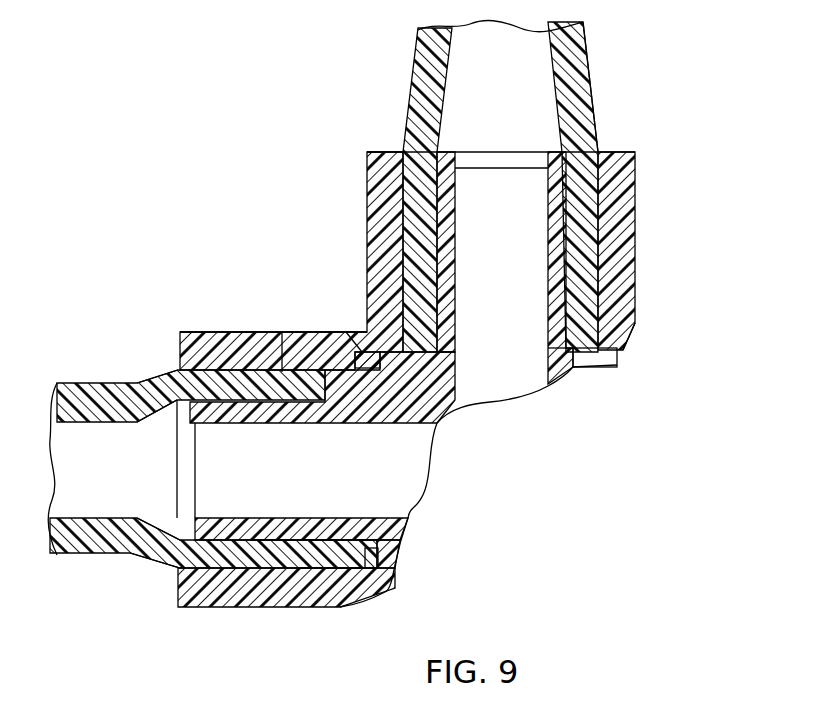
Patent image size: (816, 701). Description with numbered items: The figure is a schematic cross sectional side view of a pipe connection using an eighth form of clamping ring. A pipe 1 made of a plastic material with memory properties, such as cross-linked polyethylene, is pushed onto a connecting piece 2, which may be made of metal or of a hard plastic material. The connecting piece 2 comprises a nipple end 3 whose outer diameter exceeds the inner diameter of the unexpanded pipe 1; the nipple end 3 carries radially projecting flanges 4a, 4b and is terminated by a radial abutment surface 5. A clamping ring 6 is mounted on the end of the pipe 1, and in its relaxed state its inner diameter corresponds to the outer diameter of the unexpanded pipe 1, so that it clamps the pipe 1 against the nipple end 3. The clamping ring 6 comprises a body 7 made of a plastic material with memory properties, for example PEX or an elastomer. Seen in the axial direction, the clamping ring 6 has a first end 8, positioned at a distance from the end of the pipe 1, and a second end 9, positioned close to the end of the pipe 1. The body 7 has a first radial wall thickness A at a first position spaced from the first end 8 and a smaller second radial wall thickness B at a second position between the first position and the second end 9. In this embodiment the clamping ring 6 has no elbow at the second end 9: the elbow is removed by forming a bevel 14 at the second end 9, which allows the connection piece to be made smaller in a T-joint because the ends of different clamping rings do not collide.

The pipe 1 is at (576, 75).
The connecting piece 2 is at (538, 476).
The nipple end 3 is at (556, 246).
The flange 4a is at (583, 145).
The flange 4b is at (434, 255).
The radial abutment surface 5 is at (636, 306).
The clamping ring 6 is at (657, 232).
The body 7 is at (380, 230).
The first end 8 is at (383, 152).
The second end 9 is at (590, 352).
The bevel 14 is at (625, 347).
The first radial wall thickness A is at (282, 332).
The second radial wall thickness B is at (346, 332).